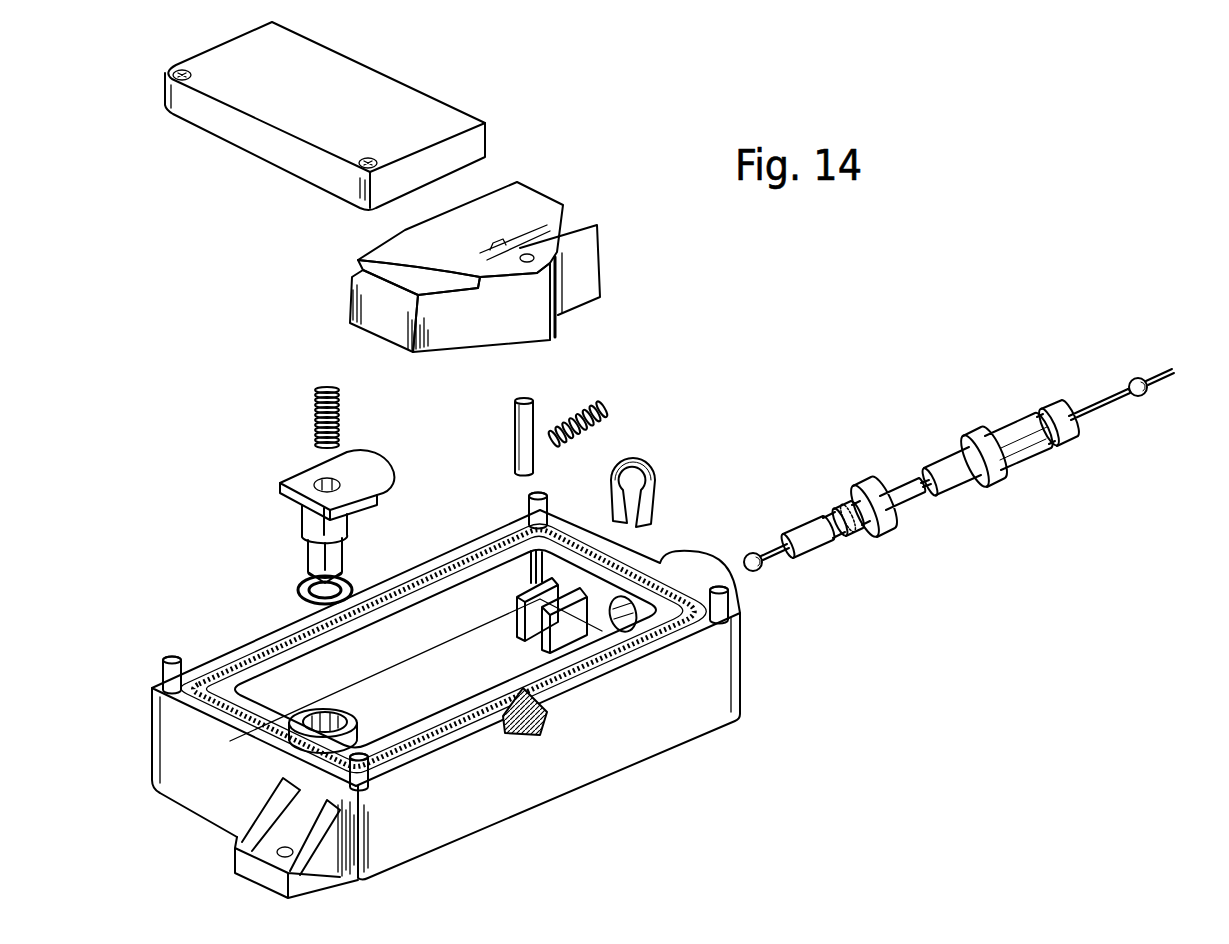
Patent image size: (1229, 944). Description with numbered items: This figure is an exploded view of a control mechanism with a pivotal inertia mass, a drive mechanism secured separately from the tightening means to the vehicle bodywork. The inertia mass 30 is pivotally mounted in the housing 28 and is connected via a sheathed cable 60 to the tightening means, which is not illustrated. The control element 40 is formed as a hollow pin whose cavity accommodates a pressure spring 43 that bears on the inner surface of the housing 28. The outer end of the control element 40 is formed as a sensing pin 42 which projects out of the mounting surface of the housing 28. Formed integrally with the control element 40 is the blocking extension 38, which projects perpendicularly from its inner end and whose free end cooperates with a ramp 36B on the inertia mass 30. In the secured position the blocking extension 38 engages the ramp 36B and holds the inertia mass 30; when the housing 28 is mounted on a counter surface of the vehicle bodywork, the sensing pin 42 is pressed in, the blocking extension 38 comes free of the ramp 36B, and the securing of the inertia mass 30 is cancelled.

The housing 28 is at (667, 720).
The inertia mass 30 is at (547, 325).
The ramp 36B is at (363, 272).
The blocking extension 38 is at (380, 470).
The control element 40 is at (306, 520).
The sensing pin 42 is at (313, 555).
The pressure spring 43 is at (340, 418).
The sheathed cable 60 is at (918, 496).